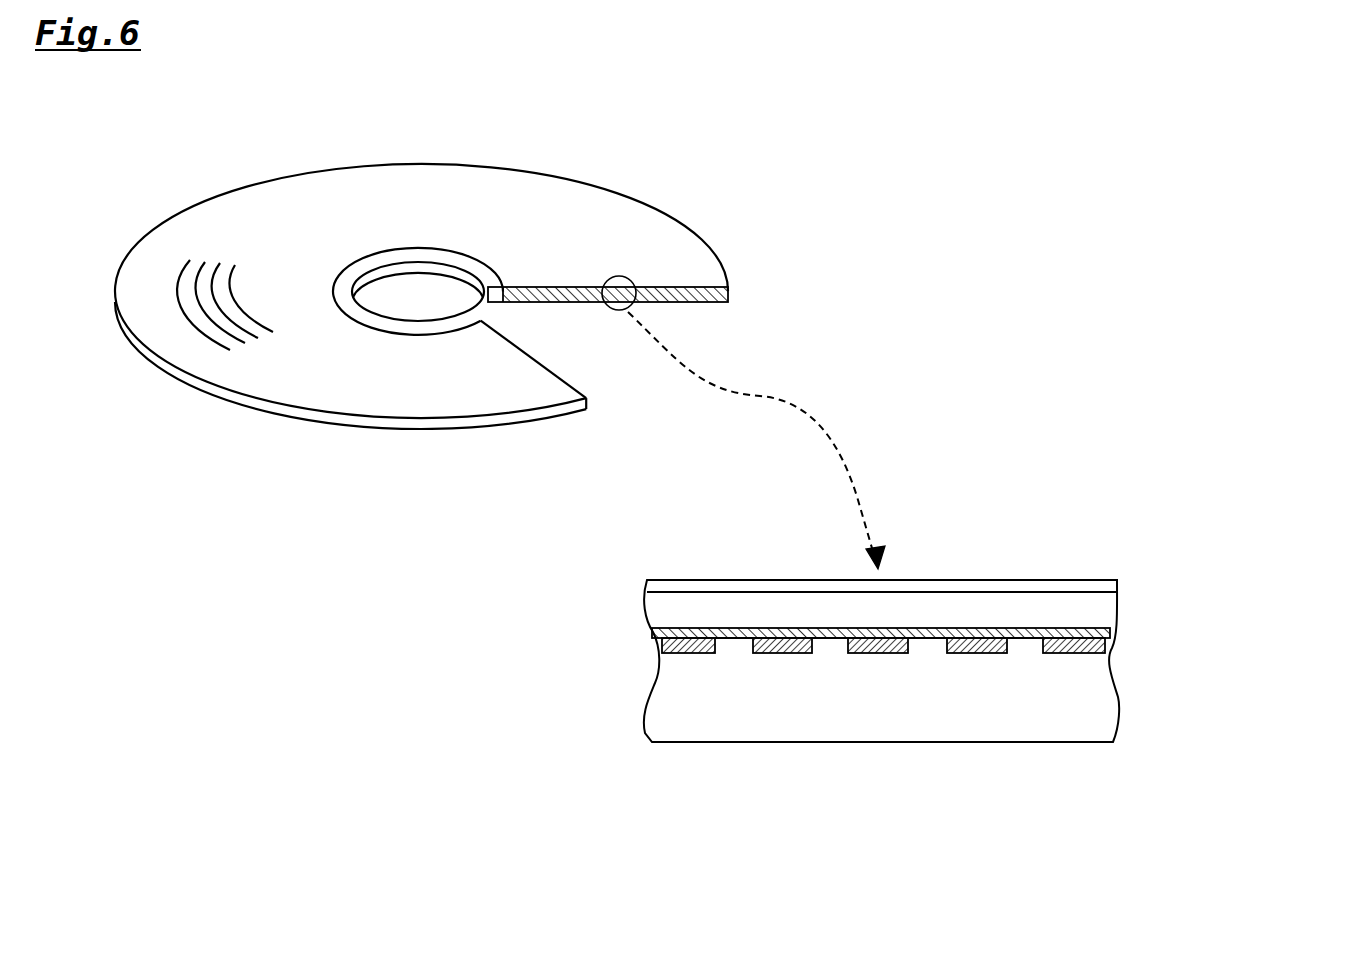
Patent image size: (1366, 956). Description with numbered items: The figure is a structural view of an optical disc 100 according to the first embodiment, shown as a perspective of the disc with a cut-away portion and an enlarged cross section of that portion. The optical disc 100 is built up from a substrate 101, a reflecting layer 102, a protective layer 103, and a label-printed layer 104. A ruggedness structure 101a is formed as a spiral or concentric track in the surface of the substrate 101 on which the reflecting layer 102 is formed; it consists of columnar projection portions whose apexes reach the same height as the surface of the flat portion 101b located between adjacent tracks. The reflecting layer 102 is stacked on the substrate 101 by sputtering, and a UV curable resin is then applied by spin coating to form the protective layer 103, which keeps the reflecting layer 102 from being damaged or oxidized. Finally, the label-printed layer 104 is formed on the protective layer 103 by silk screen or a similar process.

The optical disc 100 is at (648, 245).
The substrate 101 is at (1060, 716).
The ruggedness structure 101a is at (977, 654).
The flat portion 101b is at (831, 650).
The reflecting layer 102 is at (655, 633).
The protective layer 103 is at (1073, 612).
The label-printed layer 104 is at (951, 590).